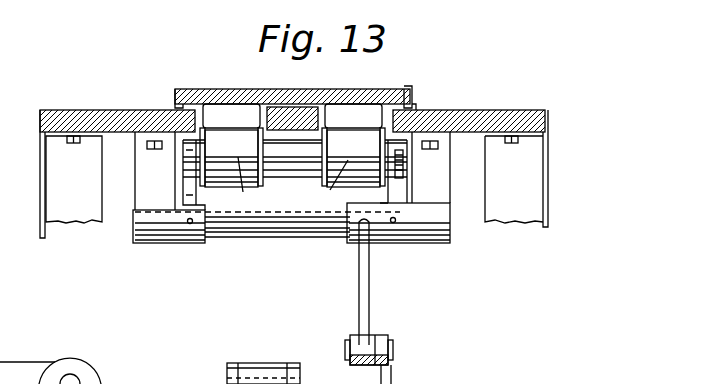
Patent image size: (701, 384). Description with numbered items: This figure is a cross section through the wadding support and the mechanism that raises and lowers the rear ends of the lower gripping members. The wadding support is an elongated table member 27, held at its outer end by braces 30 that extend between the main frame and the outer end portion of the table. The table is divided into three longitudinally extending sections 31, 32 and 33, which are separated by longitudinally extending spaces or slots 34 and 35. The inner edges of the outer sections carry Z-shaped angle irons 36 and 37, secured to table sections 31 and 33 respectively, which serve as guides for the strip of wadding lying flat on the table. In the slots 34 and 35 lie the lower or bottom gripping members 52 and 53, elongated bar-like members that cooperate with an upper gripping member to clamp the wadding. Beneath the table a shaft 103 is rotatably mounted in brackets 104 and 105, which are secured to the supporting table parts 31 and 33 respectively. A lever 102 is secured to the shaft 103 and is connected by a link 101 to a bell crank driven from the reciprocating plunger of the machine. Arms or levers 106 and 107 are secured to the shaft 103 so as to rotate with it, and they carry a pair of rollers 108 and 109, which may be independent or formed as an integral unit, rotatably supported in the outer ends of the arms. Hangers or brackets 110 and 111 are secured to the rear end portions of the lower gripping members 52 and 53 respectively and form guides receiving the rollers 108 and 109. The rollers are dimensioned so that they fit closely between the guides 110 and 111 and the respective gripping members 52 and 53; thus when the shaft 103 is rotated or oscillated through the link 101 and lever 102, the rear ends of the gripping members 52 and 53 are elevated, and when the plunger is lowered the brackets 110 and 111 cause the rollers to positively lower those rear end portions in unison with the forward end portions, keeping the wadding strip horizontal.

The elongated table member 27 is at (532, 118).
The brace 30 is at (55, 190).
The table section 31 is at (95, 118).
The table section 32 is at (283, 116).
The table section 33 is at (484, 118).
The slot 34 is at (203, 106).
The slot 35 is at (407, 93).
The Z-shaped angle iron 36 is at (173, 101).
The Z-shaped angle iron 37 is at (414, 97).
The lower gripping member 52 is at (360, 116).
The lower gripping member 53 is at (232, 118).
The link 101 is at (385, 378).
The lever 102 is at (363, 283).
The shaft 103 is at (303, 223).
The bracket 104 is at (145, 192).
The bracket 105 is at (443, 203).
The arm 106 is at (208, 198).
The arm 107 is at (396, 189).
The roller 108 is at (258, 184).
The roller 109 is at (322, 185).
The hanger 110 is at (350, 190).
The hanger 111 is at (220, 190).